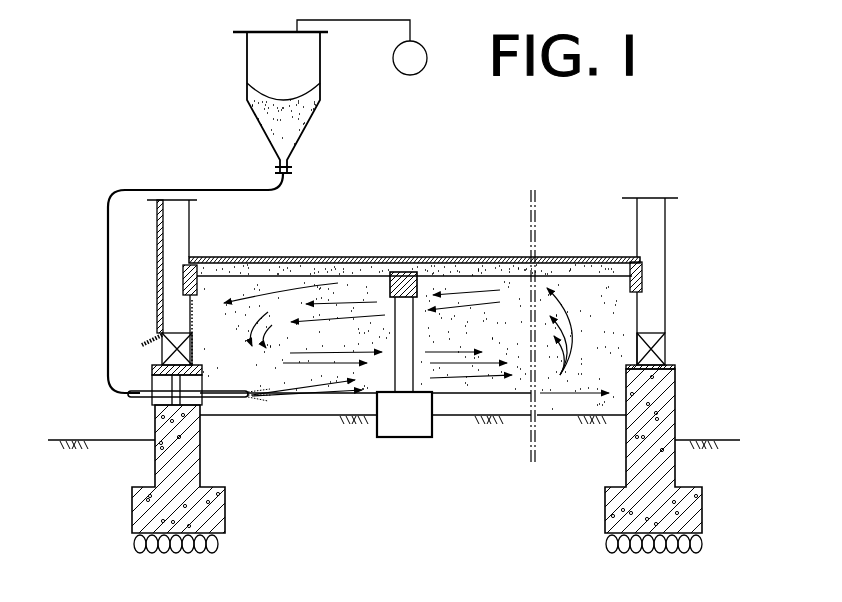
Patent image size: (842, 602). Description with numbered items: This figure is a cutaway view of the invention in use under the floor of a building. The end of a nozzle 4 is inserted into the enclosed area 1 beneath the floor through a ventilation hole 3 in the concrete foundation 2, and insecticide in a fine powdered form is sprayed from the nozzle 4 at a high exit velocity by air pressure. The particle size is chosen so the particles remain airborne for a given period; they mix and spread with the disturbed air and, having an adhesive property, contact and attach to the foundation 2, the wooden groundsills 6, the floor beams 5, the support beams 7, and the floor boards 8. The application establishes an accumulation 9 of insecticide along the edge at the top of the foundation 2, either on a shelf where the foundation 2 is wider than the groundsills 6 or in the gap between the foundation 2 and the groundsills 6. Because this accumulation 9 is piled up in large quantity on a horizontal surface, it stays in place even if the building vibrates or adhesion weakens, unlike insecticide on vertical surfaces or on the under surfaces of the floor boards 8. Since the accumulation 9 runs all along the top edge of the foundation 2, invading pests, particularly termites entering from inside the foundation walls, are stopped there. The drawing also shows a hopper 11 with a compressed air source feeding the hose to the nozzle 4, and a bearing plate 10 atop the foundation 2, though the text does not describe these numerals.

The enclosed area 1 is at (275, 381).
The foundation 2 is at (203, 455).
The ventilation hole 3 is at (158, 401).
The nozzle 4 is at (233, 400).
The floor beams 5 is at (295, 263).
The groundsills 6 is at (165, 350).
The support beams 7 is at (403, 280).
The floor boards 8 is at (228, 257).
The accumulation of insecticide 9 is at (202, 356).
The bearing plate 10 is at (665, 365).
The hopper 11 is at (237, 54).